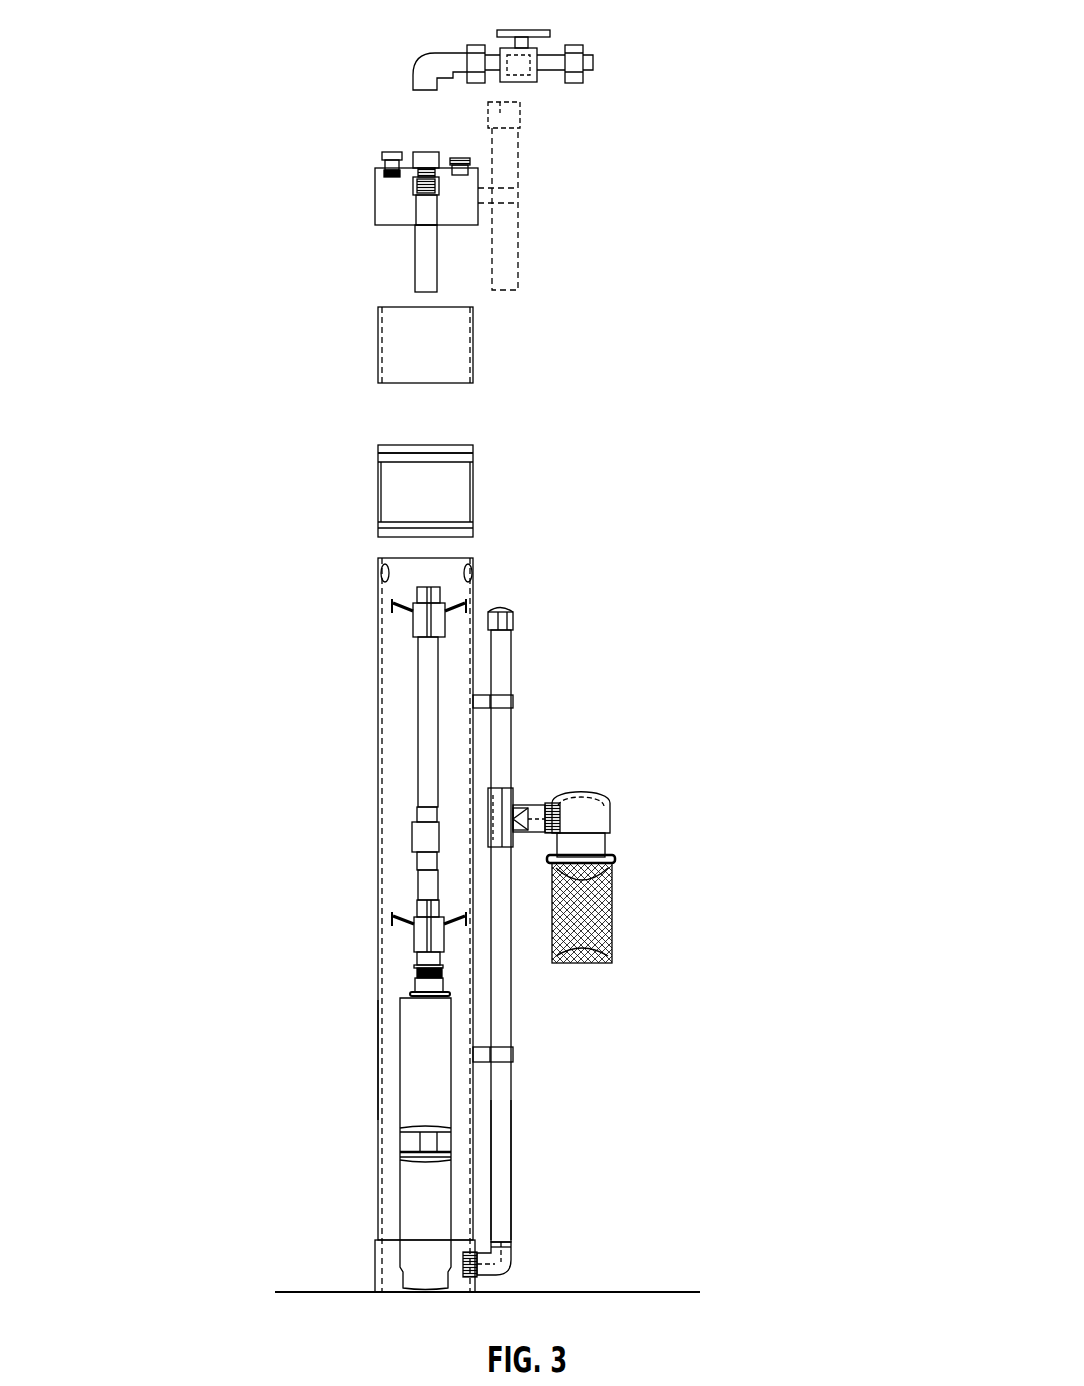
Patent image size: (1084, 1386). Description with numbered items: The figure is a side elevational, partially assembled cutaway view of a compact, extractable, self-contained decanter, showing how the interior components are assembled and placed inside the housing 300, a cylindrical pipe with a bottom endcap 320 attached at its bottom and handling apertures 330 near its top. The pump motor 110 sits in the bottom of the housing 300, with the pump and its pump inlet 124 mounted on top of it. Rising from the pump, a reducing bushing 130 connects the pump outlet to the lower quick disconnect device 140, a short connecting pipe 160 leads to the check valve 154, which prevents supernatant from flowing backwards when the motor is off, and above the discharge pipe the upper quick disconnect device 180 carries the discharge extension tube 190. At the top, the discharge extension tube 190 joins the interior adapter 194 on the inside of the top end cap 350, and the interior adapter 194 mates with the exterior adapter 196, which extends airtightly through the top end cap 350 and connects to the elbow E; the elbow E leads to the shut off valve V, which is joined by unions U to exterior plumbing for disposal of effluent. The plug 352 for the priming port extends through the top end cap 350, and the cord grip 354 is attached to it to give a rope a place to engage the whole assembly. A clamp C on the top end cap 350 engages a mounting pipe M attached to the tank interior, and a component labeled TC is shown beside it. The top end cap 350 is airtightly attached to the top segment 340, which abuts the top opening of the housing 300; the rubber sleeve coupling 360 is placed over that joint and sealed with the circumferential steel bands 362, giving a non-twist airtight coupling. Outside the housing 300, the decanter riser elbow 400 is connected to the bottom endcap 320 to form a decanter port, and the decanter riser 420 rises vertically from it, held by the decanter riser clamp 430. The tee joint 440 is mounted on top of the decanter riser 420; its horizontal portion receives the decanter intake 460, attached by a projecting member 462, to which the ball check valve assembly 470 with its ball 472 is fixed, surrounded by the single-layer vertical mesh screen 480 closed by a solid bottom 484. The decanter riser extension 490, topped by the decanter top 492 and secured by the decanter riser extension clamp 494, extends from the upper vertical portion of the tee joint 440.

The elbow E is at (413, 72).
The union U is at (467, 47).
The shut off valve V is at (533, 28).
The temperature controller TC is at (522, 123).
The mounting pipe M is at (520, 267).
The clamp C is at (520, 200).
The top end cap 350 is at (478, 180).
The plug 352 is at (462, 157).
The cord grip 354 is at (382, 160).
The exterior adapter 196 is at (432, 152).
The interior adapter 194 is at (413, 192).
The discharge extension tube 190 is at (415, 257).
The top segment 340 is at (378, 347).
The rubber sleeve coupling 360 is at (378, 497).
The circumferential steel bands 362 is at (397, 453).
The handling apertures 330 is at (473, 563).
The housing 300 is at (378, 1058).
The bottom endcap 320 is at (375, 1243).
The upper quick disconnect device 180 is at (390, 610).
The check valve 154 is at (412, 838).
The short connecting pipe 160 is at (418, 878).
The lower quick disconnect device 140 is at (414, 940).
The reducing bushing 130 is at (412, 973).
The pump motor 110 is at (400, 1190).
The pump inlet 124 is at (408, 1140).
The decanter riser extension 490 is at (513, 742).
The decanter top 492 is at (515, 618).
The decanter riser extension clamp 494 is at (515, 702).
The decanter riser clamp 430 is at (515, 1053).
The decanter riser 420 is at (512, 1155).
The decanter riser elbow 400 is at (512, 1248).
The tee joint 440 is at (510, 847).
The decanter intake 460 is at (610, 823).
The projecting member 462 is at (568, 817).
The ball check valve assembly 470 is at (593, 842).
The vertical mesh screen 480 is at (610, 927).
The ball 472 is at (565, 868).
The solid bottom 484 is at (583, 962).